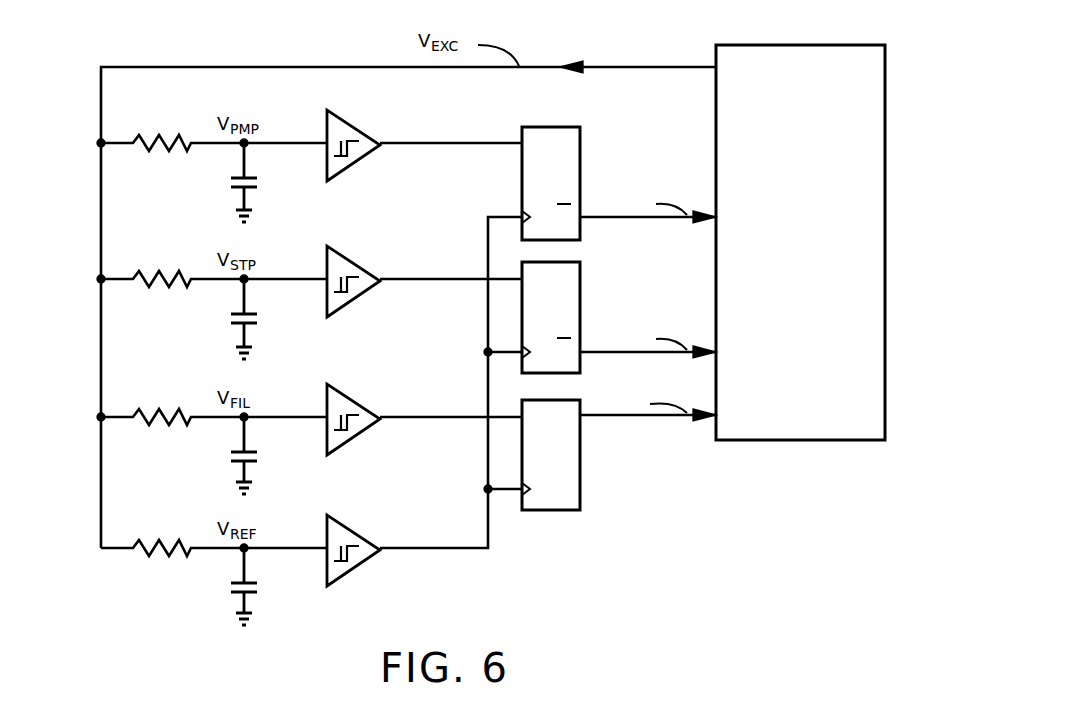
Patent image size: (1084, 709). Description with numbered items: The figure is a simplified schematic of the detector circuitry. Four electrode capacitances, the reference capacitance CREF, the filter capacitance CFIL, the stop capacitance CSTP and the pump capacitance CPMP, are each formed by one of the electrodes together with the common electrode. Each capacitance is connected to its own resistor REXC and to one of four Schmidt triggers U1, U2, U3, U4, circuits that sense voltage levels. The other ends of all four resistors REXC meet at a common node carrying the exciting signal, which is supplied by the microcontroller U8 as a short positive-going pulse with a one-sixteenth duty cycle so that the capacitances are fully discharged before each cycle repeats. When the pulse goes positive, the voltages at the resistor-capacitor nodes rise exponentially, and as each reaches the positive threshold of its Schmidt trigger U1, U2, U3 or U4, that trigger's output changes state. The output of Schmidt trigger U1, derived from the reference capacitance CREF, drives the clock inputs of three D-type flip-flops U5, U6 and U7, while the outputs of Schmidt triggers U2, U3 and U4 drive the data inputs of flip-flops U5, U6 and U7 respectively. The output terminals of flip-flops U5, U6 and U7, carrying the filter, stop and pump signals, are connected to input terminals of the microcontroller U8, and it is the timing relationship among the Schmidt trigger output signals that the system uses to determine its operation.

The Schmidt trigger U1 is at (339, 518).
The Schmidt trigger U2 is at (339, 390).
The Schmidt trigger U3 is at (339, 252).
The Schmidt trigger U4 is at (339, 116).
The D-type flip-flop U5 is at (581, 455).
The D-type flip-flop U6 is at (581, 274).
The D-type flip-flop U7 is at (581, 150).
The microcontroller U8 is at (810, 44).
The resistor REXC is at (162, 535).
The pump electrode capacitance CPMP is at (253, 187).
The stop electrode capacitance CSTP is at (253, 326).
The filter electrode capacitance CFIL is at (253, 464).
The reference electrode capacitance CREF is at (253, 594).